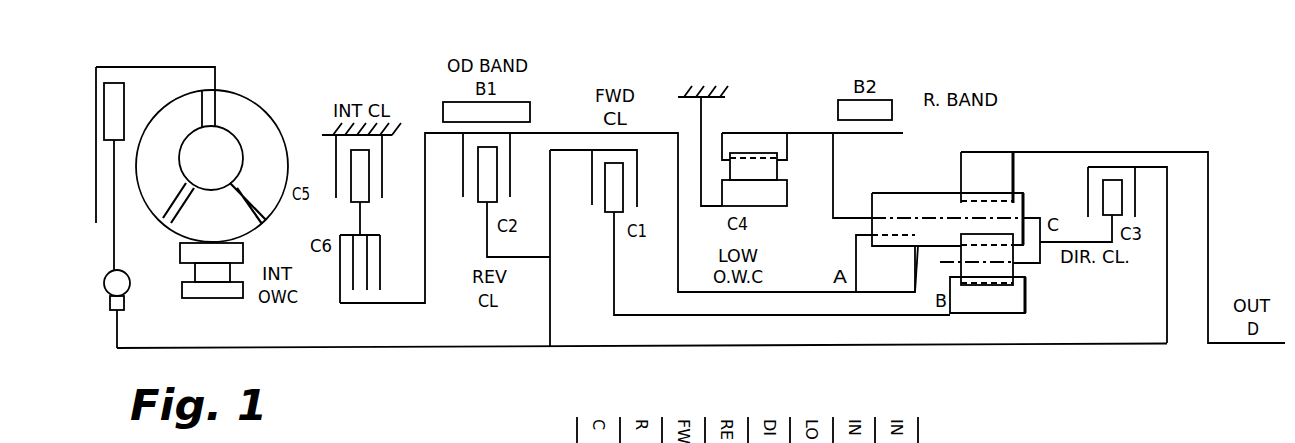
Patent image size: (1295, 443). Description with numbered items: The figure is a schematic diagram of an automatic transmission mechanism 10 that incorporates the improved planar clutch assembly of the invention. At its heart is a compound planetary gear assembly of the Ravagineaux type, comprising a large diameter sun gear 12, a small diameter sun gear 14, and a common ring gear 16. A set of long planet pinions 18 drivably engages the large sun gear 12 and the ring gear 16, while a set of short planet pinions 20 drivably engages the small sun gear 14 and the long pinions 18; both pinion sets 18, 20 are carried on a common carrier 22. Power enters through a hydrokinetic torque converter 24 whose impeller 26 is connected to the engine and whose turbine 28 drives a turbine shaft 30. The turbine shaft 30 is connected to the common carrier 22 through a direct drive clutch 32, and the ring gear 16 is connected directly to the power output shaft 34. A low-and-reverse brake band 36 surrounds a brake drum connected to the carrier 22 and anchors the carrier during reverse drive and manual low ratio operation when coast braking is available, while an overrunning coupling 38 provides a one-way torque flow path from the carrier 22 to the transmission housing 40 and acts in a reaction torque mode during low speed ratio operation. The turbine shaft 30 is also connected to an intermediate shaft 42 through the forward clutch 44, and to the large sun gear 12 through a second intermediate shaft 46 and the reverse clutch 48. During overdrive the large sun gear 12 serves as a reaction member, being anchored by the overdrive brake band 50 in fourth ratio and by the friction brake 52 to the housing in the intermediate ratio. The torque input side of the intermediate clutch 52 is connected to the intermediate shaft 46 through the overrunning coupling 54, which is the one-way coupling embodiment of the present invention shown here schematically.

The clutch drum 10 is at (913, 187).
The large diameter sun gear 12 is at (905, 283).
The small diameter sun gear 14 is at (1012, 305).
The common ring gear 16 is at (1000, 158).
The long planet pinions 18 is at (1017, 207).
The short planet pinions 20 is at (1012, 267).
The common carrier 22 is at (1040, 262).
The hydrokinetic torque converter 24 is at (255, 98).
The impeller 26 is at (260, 133).
The turbine 28 is at (187, 113).
The turbine shaft 30 is at (433, 348).
The direct drive clutch 32 is at (1135, 195).
The power output shaft 34 is at (1222, 345).
The low-and-reverse brake band 36 is at (843, 105).
The overrunning coupling 38 is at (753, 168).
The transmission housing 40 is at (697, 82).
The intermediate shaft 42 is at (693, 317).
The forward clutch 44 is at (610, 193).
The intermediate shaft 46 is at (755, 293).
The reverse clutch 48 is at (480, 192).
The overdrive brake band 50 is at (530, 103).
The friction brake 52 is at (369, 160).
The overrunning coupling 54 is at (343, 303).